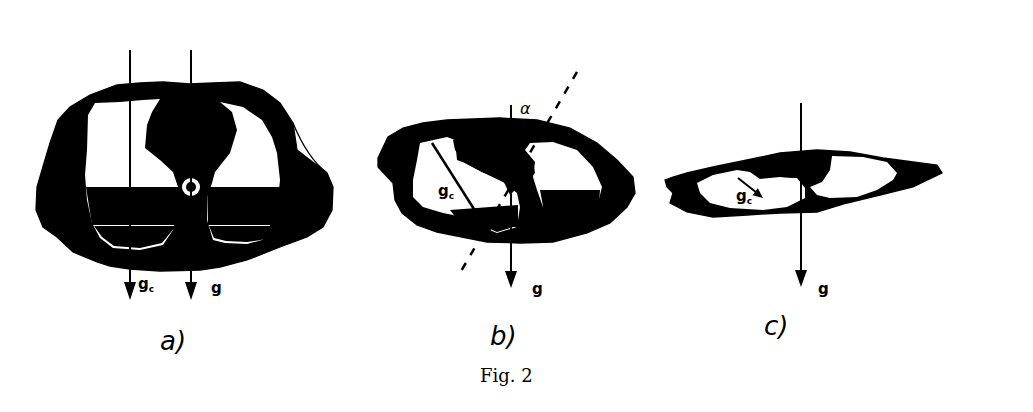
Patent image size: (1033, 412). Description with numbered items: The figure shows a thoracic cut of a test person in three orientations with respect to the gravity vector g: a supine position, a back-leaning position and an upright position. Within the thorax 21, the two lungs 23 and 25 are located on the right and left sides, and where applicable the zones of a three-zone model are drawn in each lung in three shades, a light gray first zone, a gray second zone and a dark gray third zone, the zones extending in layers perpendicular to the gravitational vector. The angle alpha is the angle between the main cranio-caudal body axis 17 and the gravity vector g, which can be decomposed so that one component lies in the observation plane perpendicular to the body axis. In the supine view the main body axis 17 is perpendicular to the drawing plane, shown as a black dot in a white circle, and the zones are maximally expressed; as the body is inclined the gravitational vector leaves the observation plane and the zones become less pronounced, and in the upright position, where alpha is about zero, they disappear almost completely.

The main cranio-caudal body axis 17 is at (570, 92).
The thorax 21 is at (268, 92).
The lung 23 is at (297, 153).
The lung 25 is at (98, 137).